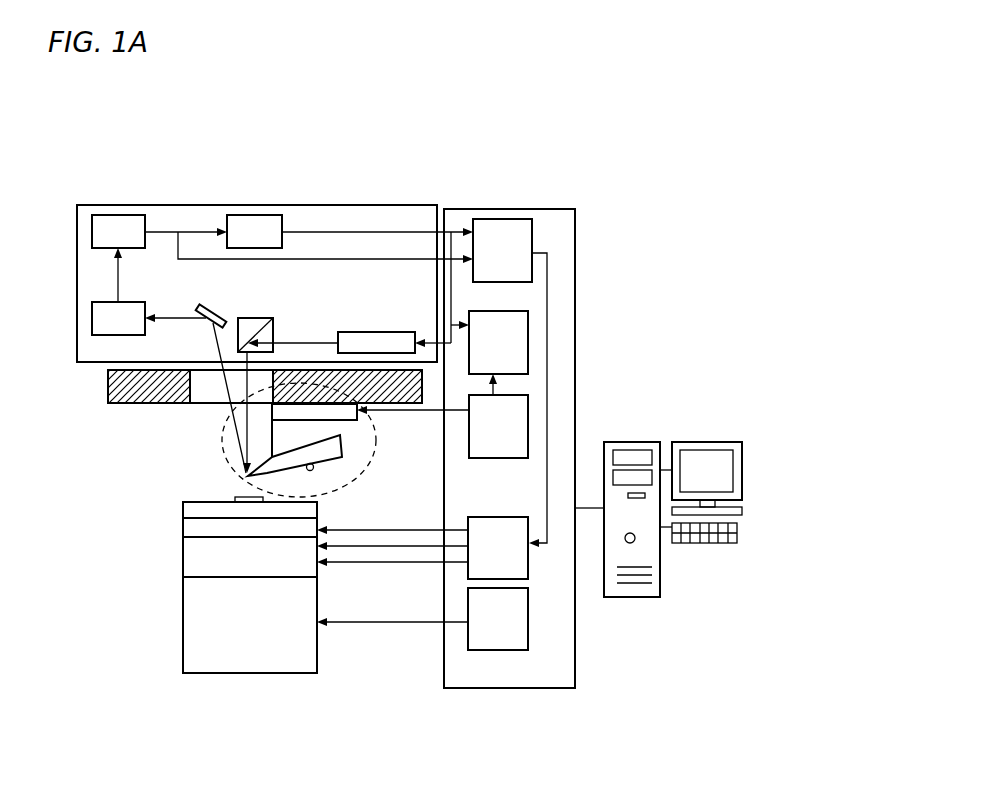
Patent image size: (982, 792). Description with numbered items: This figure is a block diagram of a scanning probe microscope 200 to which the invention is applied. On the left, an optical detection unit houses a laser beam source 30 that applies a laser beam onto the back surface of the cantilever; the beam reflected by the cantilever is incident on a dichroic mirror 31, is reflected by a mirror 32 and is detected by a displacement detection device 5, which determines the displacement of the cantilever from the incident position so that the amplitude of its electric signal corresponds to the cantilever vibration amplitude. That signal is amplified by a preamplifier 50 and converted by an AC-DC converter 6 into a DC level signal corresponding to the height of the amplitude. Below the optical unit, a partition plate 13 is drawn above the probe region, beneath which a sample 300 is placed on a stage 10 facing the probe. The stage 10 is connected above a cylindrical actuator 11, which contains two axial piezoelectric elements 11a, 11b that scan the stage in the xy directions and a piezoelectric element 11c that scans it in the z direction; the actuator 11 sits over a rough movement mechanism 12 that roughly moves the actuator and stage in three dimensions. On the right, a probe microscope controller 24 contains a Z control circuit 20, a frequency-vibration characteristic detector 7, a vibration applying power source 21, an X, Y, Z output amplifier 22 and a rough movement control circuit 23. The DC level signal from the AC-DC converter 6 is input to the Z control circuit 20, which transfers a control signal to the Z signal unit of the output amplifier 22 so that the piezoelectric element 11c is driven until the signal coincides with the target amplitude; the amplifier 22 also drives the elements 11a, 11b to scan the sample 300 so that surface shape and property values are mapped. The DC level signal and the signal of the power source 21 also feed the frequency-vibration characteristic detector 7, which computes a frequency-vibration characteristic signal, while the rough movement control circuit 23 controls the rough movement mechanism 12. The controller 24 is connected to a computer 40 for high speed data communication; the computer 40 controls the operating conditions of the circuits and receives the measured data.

The scanning probe microscope 200 is at (630, 122).
The displacement detection device 5 is at (113, 323).
The preamplifier 50 is at (100, 222).
The AC-DC converter 6 is at (247, 222).
The laser beam source 30 is at (342, 340).
The dichroic mirror 31 is at (253, 322).
The mirror 32 is at (210, 307).
The partition plate 13 is at (120, 402).
The sample 300 is at (237, 495).
The stage 10 is at (188, 505).
The cylindrical actuator (scanner) 11 is at (62, 537).
The piezoelectric element 11a is at (197, 560).
The piezoelectric element 11b is at (197, 560).
The piezoelectric element 11c is at (197, 532).
The rough movement mechanism 12 is at (193, 625).
The Z control circuit 20 is at (503, 222).
The probe microscope controller 24 is at (575, 248).
The frequency-vibration characteristic detector 7 is at (515, 348).
The vibration applying power source 21 is at (515, 415).
The X, Y, Z output amplifier 22 is at (522, 553).
The rough movement control circuit 23 is at (492, 645).
The computer 40 is at (637, 430).